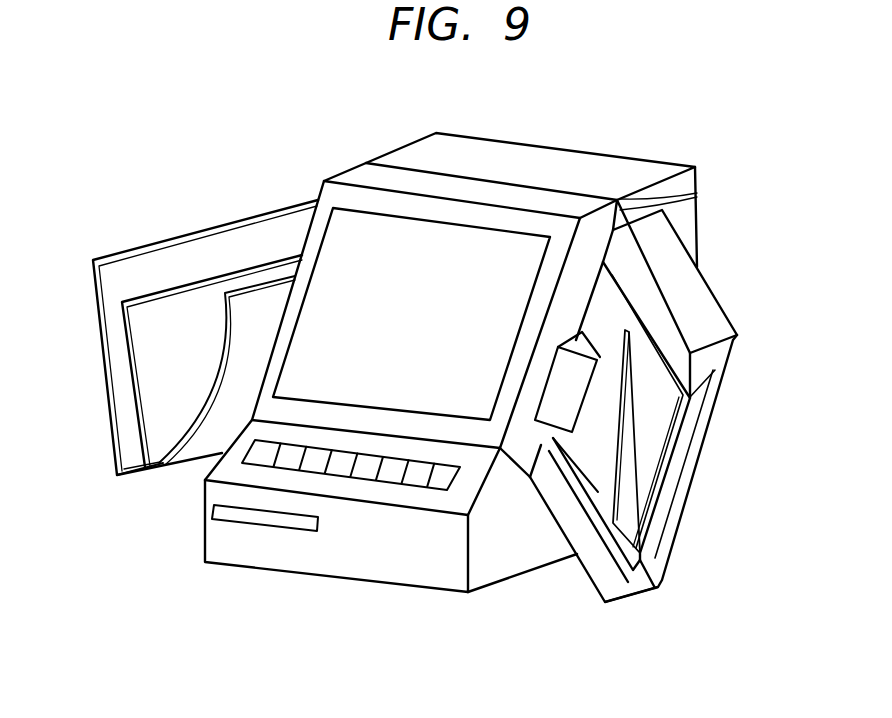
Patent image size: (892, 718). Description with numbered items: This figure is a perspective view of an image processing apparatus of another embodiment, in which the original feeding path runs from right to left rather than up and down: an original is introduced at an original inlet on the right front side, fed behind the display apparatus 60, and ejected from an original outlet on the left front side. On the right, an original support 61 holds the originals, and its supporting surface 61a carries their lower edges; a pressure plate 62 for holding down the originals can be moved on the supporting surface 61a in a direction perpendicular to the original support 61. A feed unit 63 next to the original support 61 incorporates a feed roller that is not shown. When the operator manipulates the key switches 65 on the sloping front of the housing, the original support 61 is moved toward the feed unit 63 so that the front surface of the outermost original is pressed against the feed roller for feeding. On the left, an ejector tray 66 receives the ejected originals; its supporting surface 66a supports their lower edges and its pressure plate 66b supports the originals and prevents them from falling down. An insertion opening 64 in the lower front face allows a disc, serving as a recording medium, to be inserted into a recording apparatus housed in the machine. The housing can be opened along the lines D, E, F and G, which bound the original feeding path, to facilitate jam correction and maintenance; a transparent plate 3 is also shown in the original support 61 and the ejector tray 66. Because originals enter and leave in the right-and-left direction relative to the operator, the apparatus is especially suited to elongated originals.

The display apparatus 60 is at (358, 237).
The original support 61 is at (668, 498).
The supporting surface 61a is at (648, 560).
The pressure plate 62 is at (598, 492).
The feed unit 63 is at (573, 365).
The insertion opening 64 is at (262, 517).
The key switches 65 is at (445, 480).
The ejector tray 66 is at (145, 267).
The supporting surface 66a is at (127, 477).
The pressure plate 66b is at (260, 310).
The transparent plate 3 is at (198, 297).
The opening line D is at (500, 177).
The opening line E is at (698, 193).
The opening line F is at (517, 467).
The opening line G is at (223, 455).